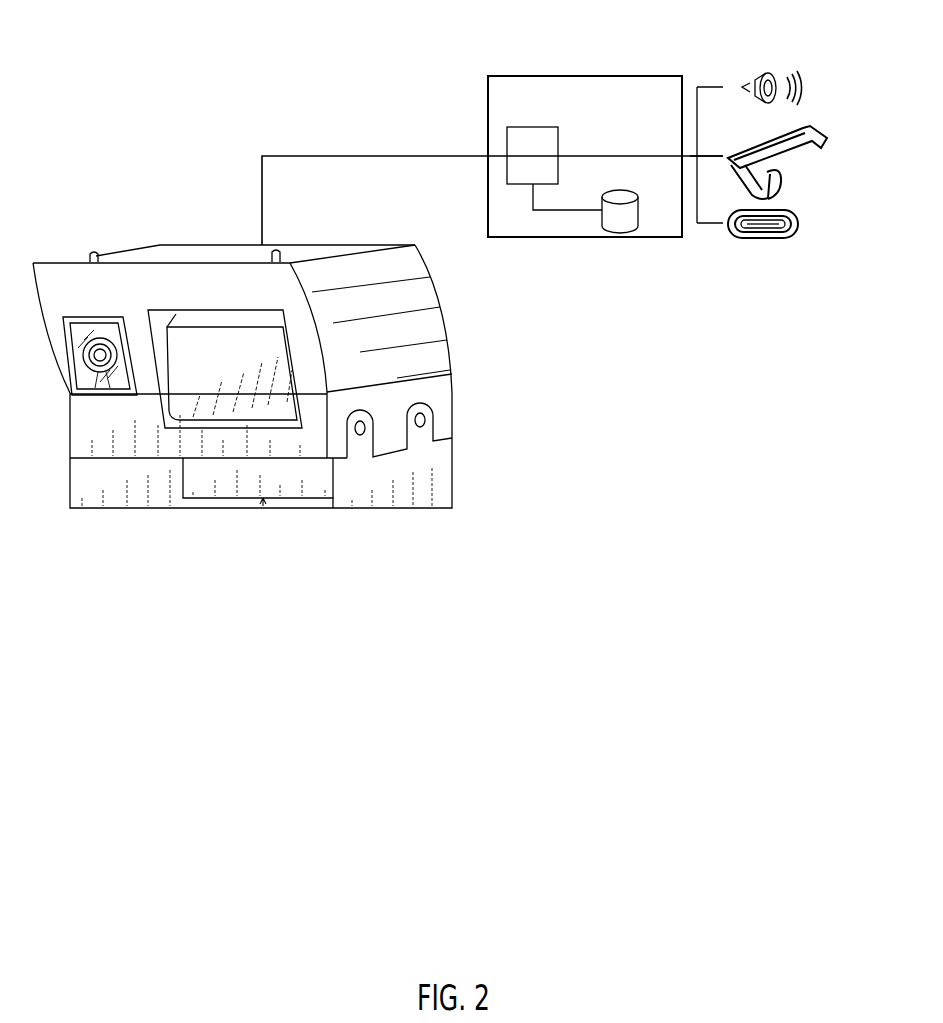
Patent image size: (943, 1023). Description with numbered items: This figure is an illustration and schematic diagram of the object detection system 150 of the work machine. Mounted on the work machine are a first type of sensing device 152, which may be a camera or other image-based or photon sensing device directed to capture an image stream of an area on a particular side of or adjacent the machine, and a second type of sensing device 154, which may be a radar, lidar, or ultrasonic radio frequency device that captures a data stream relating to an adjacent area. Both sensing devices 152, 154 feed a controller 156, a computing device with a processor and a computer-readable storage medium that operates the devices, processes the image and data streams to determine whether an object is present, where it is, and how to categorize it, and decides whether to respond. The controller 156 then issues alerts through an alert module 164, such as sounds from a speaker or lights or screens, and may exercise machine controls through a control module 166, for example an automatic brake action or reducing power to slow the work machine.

The object detection system 150 is at (150, 64).
The first type of sensing device 152 is at (82, 372).
The second type of sensing device 154 is at (180, 378).
The controller 156 is at (552, 75).
The alert module 164 is at (803, 87).
The control module 166 is at (792, 130).